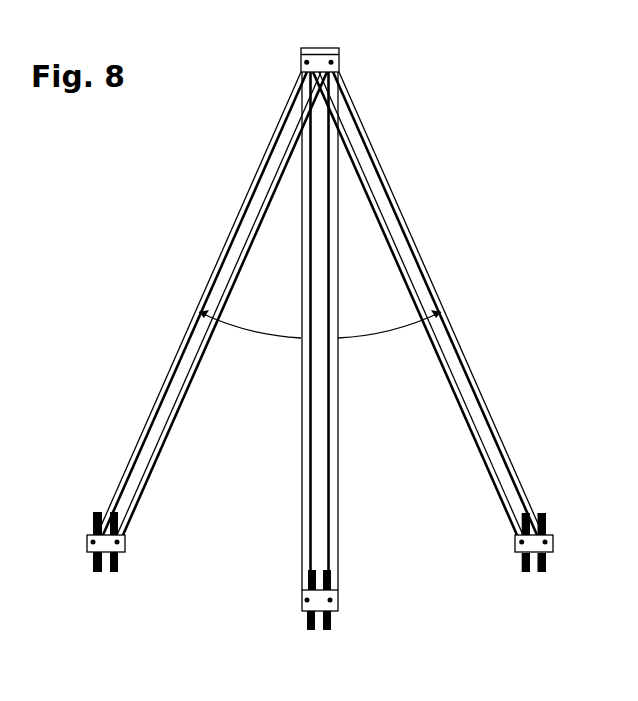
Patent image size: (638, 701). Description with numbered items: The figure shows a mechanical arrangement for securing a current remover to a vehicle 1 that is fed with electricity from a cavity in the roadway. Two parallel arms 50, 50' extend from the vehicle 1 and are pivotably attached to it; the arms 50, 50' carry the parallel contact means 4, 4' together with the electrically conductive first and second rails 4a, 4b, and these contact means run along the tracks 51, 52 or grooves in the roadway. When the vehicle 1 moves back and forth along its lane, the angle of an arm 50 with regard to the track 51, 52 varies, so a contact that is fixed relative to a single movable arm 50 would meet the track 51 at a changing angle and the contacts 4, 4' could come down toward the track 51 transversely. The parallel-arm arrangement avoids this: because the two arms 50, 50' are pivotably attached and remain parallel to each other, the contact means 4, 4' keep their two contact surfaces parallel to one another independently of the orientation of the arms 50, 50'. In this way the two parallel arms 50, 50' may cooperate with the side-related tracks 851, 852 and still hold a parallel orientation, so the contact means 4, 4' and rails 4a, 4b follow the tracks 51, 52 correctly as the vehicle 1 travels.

The vehicle 1 is at (340, 64).
The vehicle related contact means 4 is at (287, 569).
The contact means 4' is at (358, 557).
The electrical conductive first rail 4a is at (212, 377).
The electrical conductive second rail 4b is at (428, 377).
The arm 50 is at (269, 331).
The arm 50' is at (375, 331).
The first roadway section related groove 51 is at (307, 580).
The second roadway section related groove 52 is at (325, 576).
The side-related track 851 is at (103, 579).
The side-related track 852 is at (537, 576).